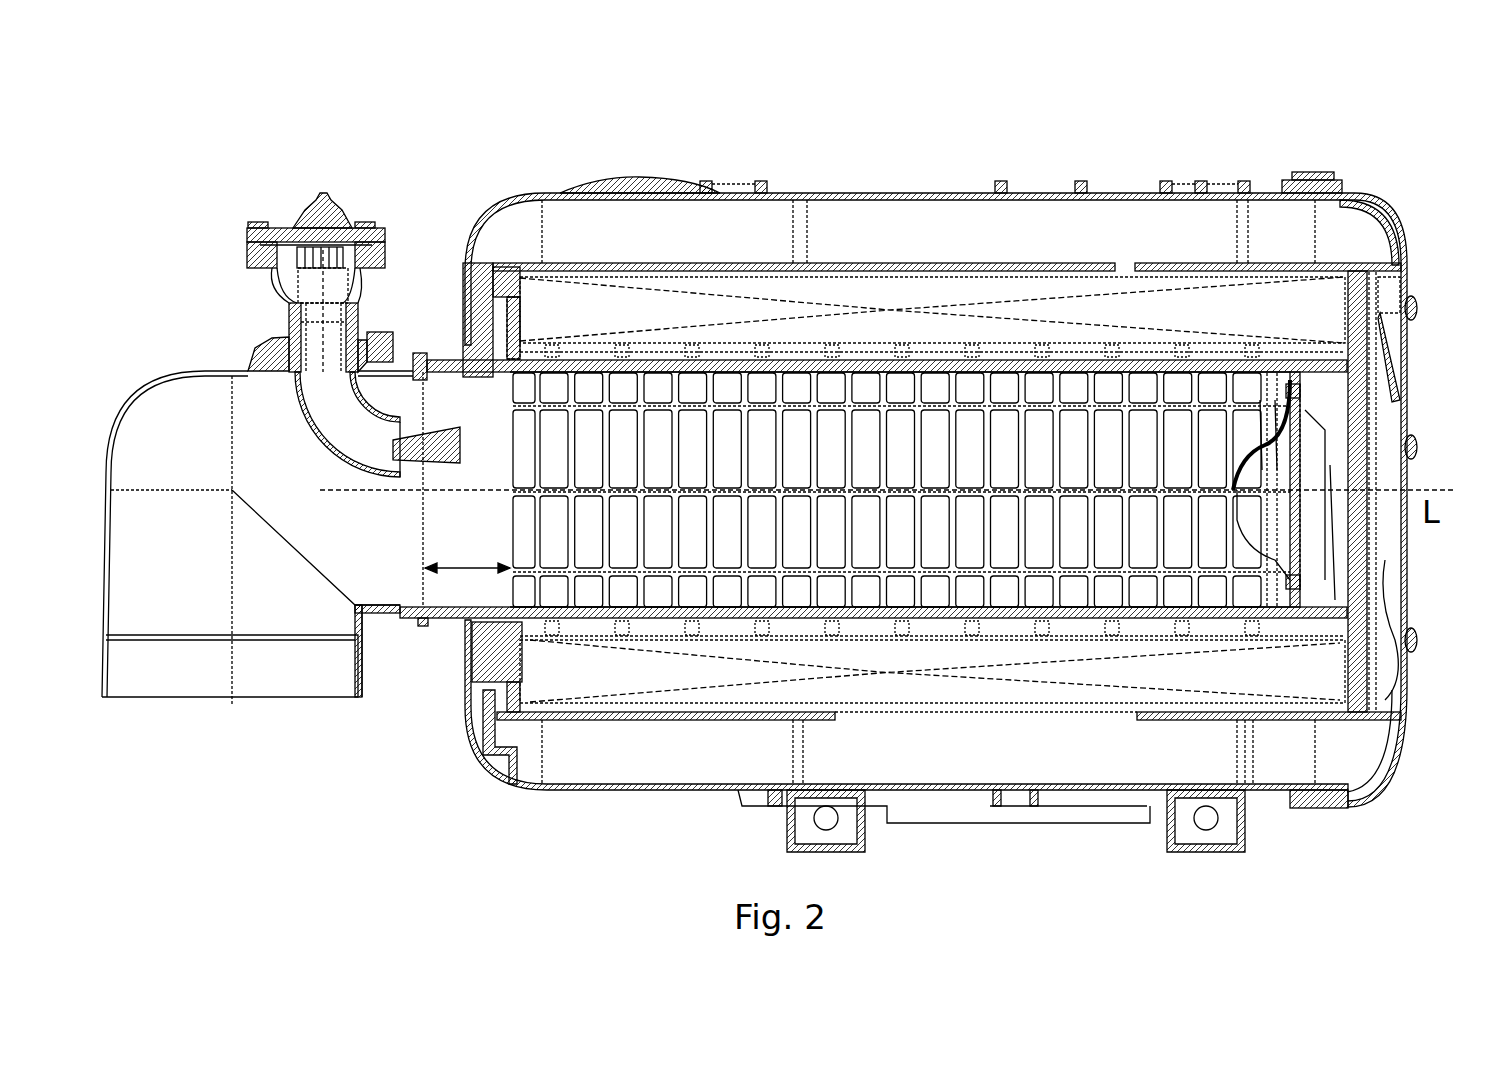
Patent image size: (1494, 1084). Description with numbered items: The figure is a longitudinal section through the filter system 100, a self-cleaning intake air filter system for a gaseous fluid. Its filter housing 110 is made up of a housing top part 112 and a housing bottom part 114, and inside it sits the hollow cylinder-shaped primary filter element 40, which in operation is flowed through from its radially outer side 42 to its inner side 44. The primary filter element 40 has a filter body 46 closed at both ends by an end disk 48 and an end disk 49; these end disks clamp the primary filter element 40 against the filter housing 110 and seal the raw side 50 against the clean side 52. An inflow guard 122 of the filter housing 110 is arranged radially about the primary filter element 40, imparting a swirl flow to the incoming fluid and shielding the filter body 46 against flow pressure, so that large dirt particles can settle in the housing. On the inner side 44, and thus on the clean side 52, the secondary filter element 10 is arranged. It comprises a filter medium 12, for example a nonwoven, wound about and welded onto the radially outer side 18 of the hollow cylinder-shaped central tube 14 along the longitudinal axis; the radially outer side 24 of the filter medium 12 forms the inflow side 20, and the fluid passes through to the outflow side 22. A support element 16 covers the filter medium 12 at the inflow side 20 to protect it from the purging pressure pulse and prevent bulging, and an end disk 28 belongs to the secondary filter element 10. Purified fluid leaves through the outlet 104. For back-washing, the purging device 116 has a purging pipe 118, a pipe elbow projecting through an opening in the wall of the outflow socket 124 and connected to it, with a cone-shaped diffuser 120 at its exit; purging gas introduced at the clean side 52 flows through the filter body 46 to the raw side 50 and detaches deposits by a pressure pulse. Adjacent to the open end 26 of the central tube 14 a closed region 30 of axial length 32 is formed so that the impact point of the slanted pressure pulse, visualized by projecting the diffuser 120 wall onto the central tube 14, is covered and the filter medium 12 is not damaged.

The secondary filter element 10 is at (978, 350).
The filter medium 12 is at (1038, 380).
The central tube 14 is at (1115, 392).
The support element 16 is at (1136, 350).
The radially outer side 18 is at (1002, 366).
The inflow side 20 is at (763, 360).
The outflow side 22 is at (731, 386).
The radially outer side 24 is at (738, 360).
The open end 26 is at (425, 614).
The end disk 28 is at (1292, 393).
The region 30 is at (441, 385).
The length 32 is at (482, 567).
The primary filter element 40 is at (850, 280).
The radially outer side 42 is at (866, 268).
The inner side 44 is at (897, 380).
The filter body 46 is at (600, 331).
The end disk 48 is at (1360, 322).
The end disk 49 is at (478, 292).
The raw side 50 is at (908, 255).
The clean side 52 is at (881, 464).
The filter system 100 is at (392, 176).
The outlet 104 is at (157, 397).
The filter housing 110 is at (556, 195).
The housing top part 112 is at (672, 190).
The housing bottom part 114 is at (1362, 194).
The purging device 116 is at (296, 228).
The purging pipe 118 is at (340, 449).
The diffuser 120 is at (436, 460).
The inflow guard 122 is at (612, 262).
The outflow socket 124 is at (250, 358).